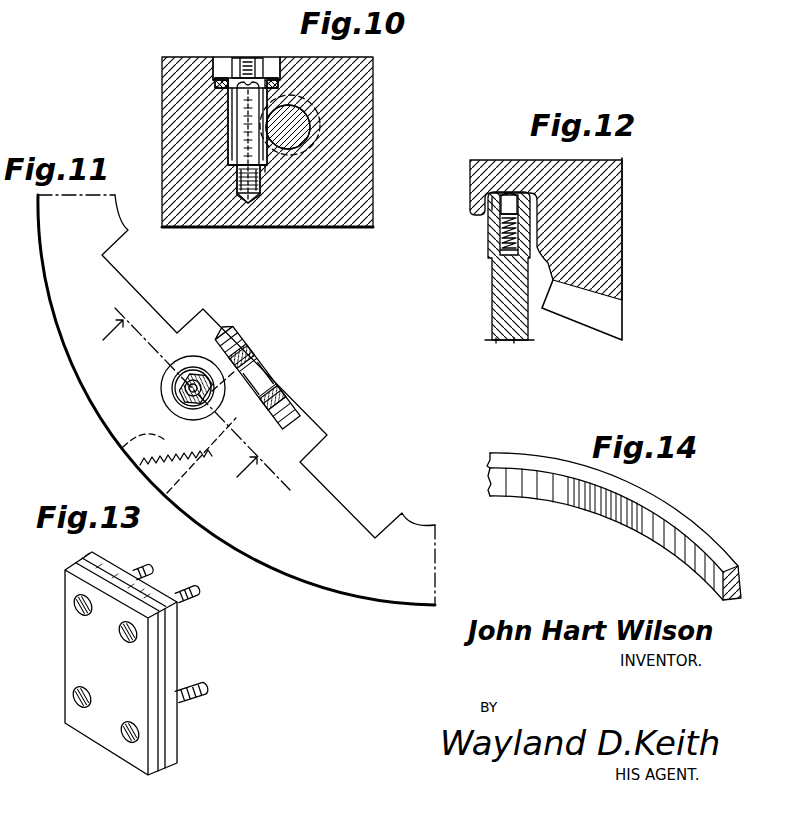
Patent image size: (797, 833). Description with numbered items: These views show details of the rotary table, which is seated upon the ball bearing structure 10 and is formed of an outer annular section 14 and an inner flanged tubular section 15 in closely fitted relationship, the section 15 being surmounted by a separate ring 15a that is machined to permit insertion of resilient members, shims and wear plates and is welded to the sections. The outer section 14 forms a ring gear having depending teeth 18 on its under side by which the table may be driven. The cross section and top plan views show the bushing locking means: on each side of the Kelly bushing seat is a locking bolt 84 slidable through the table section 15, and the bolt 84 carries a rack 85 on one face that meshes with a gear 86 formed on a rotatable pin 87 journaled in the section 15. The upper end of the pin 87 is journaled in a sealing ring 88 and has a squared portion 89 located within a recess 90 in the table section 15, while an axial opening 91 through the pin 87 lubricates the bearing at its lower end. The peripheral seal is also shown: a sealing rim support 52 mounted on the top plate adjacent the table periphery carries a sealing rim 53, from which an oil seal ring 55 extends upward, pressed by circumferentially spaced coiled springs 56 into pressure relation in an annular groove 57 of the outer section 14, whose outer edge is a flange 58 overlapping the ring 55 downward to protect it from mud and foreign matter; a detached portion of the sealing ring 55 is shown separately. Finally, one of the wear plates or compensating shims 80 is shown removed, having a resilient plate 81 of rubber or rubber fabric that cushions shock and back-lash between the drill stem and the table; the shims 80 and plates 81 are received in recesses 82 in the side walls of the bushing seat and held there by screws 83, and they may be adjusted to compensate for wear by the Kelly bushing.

In FIG. 11, the ball bearing structure 10 is at (198, 396).
In FIG. 12, the outer annular section 14 is at (473, 168).
In FIG. 10, the inner flanged tubular section 15 is at (164, 74).
In FIG. 11, the ring 15a is at (72, 346).
In FIG. 12, the depending teeth 18 is at (575, 324).
In FIG. 12, the sealing rim support 52 is at (498, 296).
In FIG. 12, the sealing rim 53 is at (502, 236).
In FIG. 12, the oil seal ring 55 is at (509, 190).
In FIG. 14, the oil seal ring 55 is at (684, 524).
In FIG. 12, the coiled springs 56 is at (500, 250).
In FIG. 12, the annular groove 57 is at (488, 198).
In FIG. 12, the flange 58 is at (500, 220).
In FIG. 13, the wear plates or compensating shims 80 is at (168, 768).
In FIG. 13, the resilient plates 81 is at (170, 733).
In FIG. 11, the recesses 82 is at (195, 309).
In FIG. 13, the screws 83 is at (192, 596).
In FIG. 10, the locking bolt 84 is at (300, 118).
In FIG. 11, the locking bolt 84 is at (265, 382).
In FIG. 11, the rack 85 is at (124, 447).
In FIG. 10, the gear 86 is at (240, 138).
In FIG. 10, the rotatable pin 87 is at (236, 200).
In FIG. 10, the sealing ring 88 is at (230, 78).
In FIG. 10, the squared portion 89 is at (262, 62).
In FIG. 11, the squared portion 89 is at (185, 380).
In FIG. 10, the recess 90 is at (270, 62).
In FIG. 11, the recess 90 is at (188, 357).
In FIG. 10, the axial opening 91 is at (258, 200).
In FIG. 11, the axial opening 91 is at (190, 388).